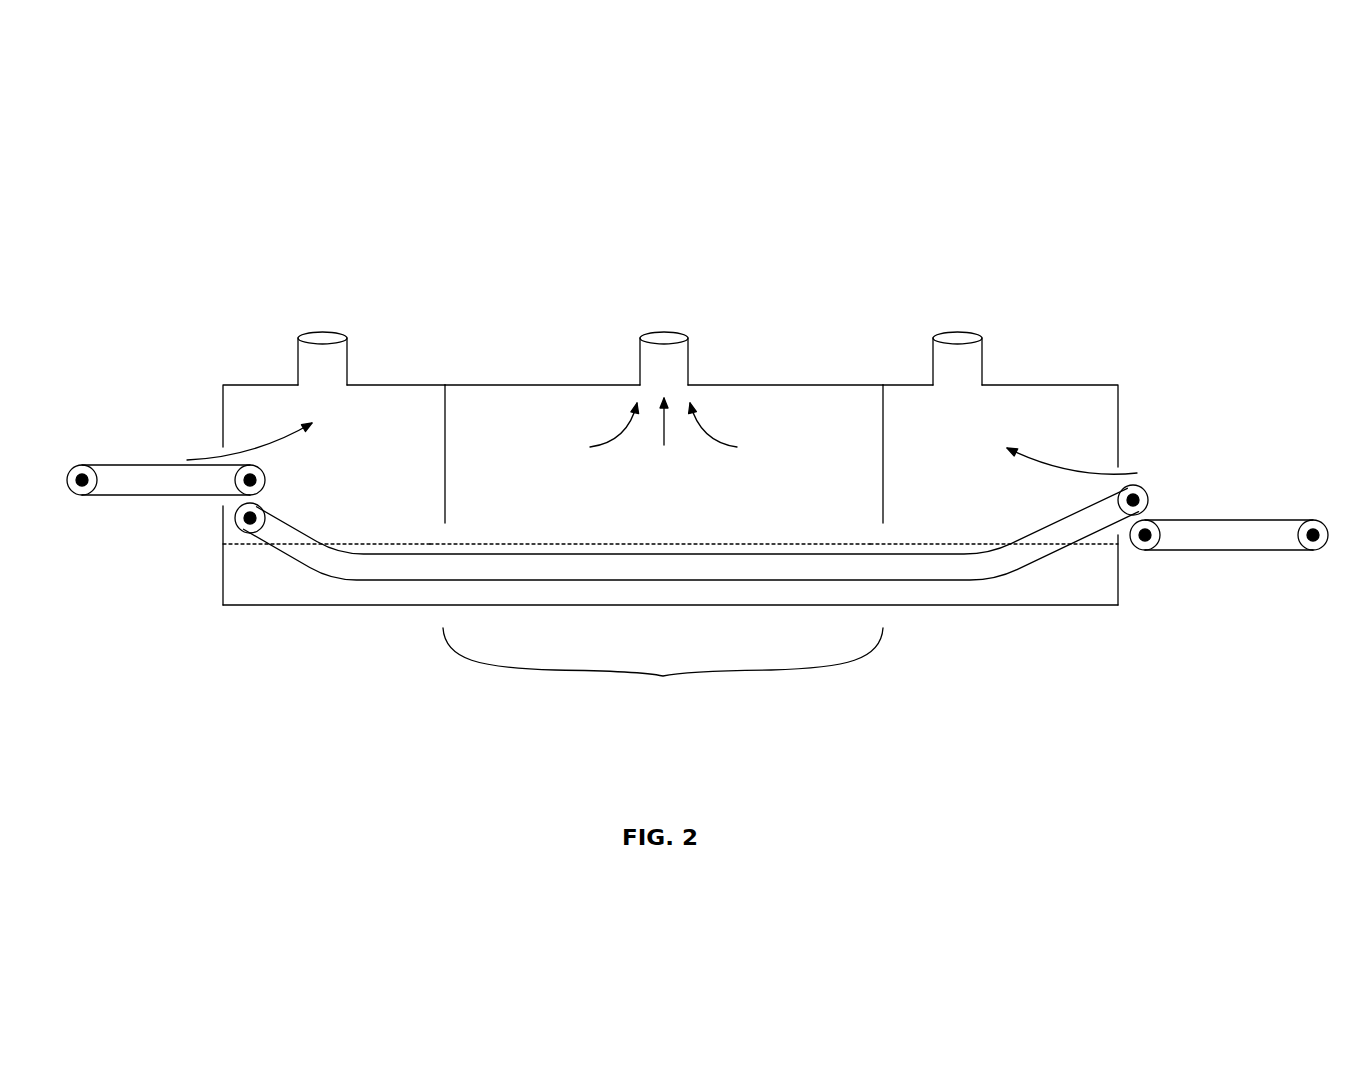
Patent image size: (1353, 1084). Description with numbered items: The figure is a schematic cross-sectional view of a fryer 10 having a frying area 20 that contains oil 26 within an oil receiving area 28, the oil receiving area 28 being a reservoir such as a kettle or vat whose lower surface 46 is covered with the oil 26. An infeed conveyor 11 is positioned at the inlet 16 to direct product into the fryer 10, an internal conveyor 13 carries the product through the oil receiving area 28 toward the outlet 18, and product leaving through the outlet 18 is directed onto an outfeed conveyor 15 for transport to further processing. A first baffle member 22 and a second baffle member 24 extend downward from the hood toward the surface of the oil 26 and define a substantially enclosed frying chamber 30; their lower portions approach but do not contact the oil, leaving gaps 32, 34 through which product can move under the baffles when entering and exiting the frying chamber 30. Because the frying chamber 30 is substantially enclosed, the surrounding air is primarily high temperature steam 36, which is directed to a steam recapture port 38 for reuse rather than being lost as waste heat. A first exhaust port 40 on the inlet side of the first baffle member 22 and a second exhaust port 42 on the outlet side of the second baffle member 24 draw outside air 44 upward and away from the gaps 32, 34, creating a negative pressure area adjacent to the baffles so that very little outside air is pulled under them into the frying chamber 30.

The fryer 10 is at (638, 207).
The infeed conveyor 11 is at (98, 463).
The internal conveyor 13 is at (280, 567).
The outfeed conveyor 15 is at (1200, 550).
The inlet 16 is at (223, 415).
The outlet 18 is at (1120, 410).
The frying area 20 is at (663, 671).
The first baffle member 22 is at (447, 446).
The second baffle member 24 is at (883, 445).
The oil 26 is at (595, 543).
The oil receiving area 28 is at (1120, 592).
The frying chamber 30 is at (699, 492).
The gap 32 is at (445, 530).
The gap 34 is at (885, 532).
The high temperature steam 36 is at (707, 418).
The steam recapture port 38 is at (657, 333).
The first exhaust port 40 is at (322, 335).
The second exhaust port 42 is at (955, 333).
The outside air 44 is at (207, 457).
The lower surface 46 is at (908, 607).